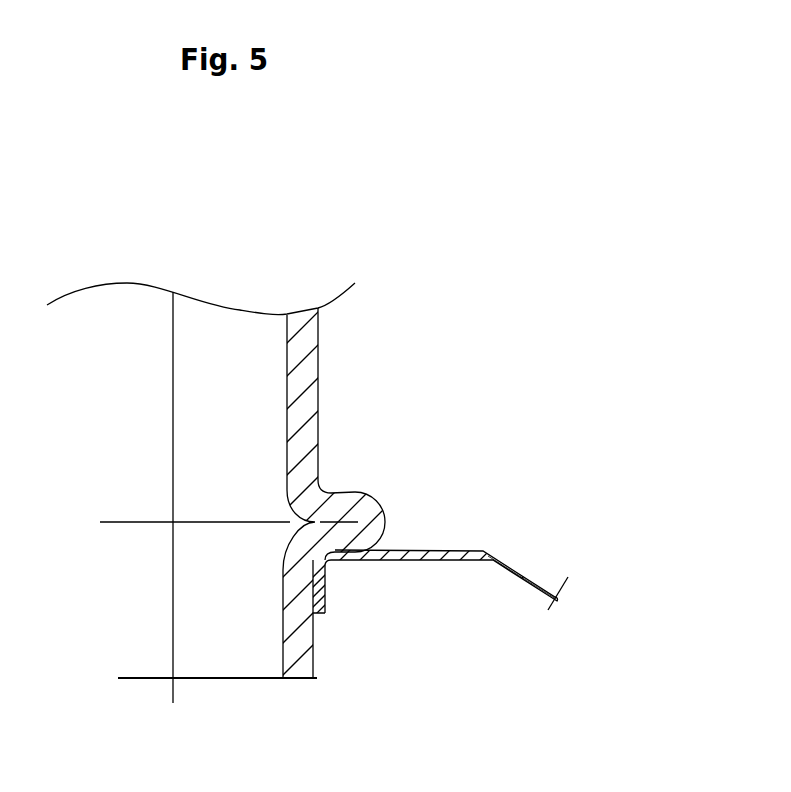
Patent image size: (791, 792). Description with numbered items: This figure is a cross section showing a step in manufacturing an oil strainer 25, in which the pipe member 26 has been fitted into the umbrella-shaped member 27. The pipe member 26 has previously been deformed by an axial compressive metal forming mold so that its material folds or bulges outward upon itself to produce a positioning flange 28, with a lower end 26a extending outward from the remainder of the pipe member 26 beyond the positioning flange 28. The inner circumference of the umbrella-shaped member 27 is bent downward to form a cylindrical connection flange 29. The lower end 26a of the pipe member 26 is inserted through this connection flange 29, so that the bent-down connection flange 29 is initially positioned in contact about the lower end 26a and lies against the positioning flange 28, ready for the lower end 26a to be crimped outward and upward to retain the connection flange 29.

The oil strainer 25 is at (432, 289).
The pipe member 26 is at (331, 387).
The lower end 26a is at (313, 663).
The umbrella-shaped member 27 is at (502, 553).
The positioning flange 28 is at (383, 498).
The connection flange 29 is at (327, 590).